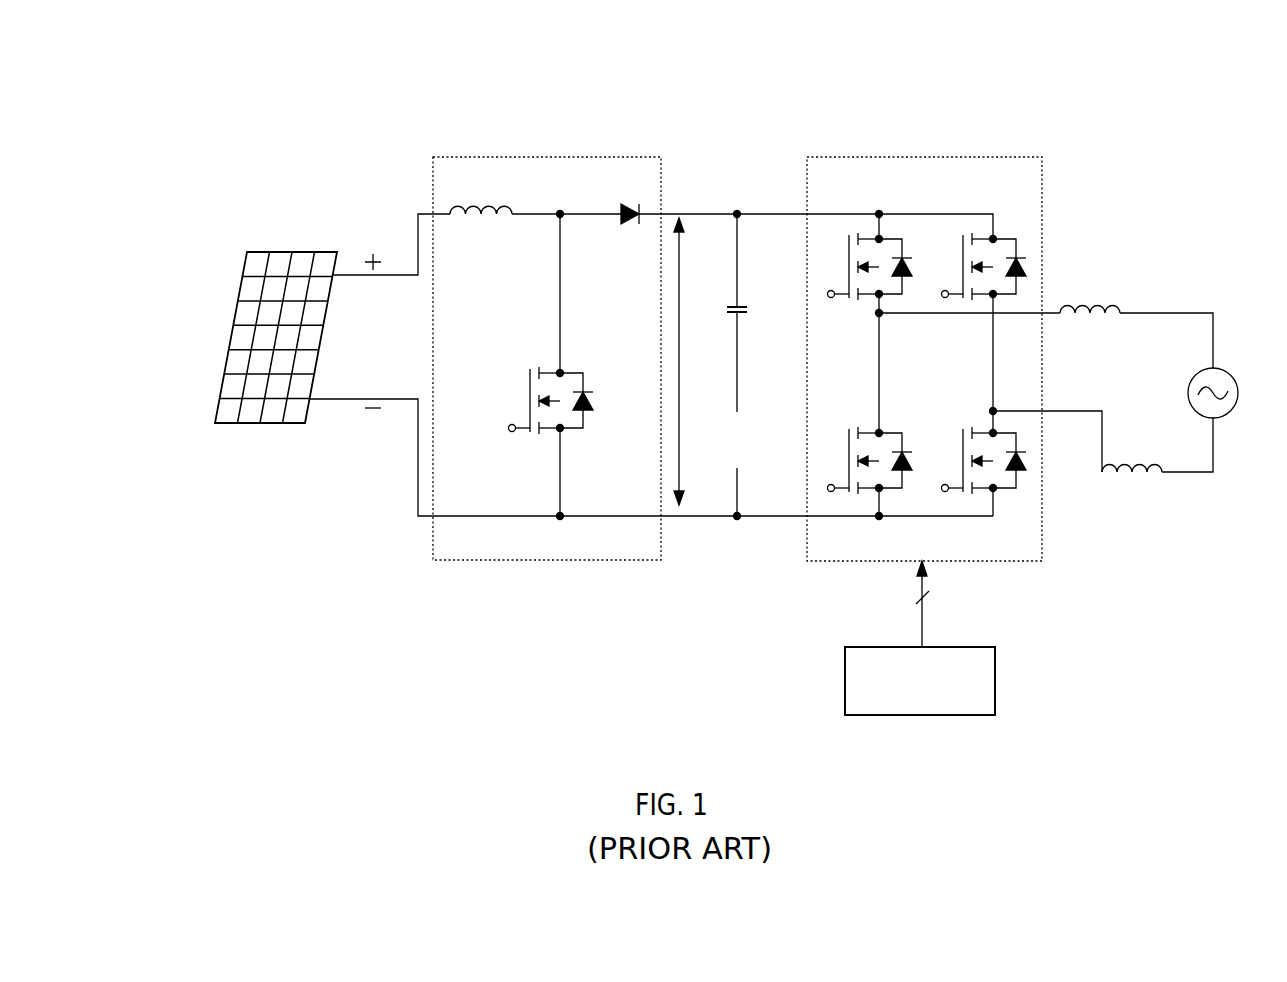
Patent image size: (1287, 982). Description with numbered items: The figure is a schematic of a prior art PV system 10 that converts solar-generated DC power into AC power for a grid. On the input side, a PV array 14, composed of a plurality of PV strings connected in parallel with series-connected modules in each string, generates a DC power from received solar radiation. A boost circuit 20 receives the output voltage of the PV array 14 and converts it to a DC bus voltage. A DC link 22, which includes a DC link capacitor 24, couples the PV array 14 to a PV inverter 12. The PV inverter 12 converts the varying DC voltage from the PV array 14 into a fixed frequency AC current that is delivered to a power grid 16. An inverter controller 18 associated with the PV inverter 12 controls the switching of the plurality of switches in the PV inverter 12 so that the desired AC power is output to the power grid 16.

The PV system 10 is at (199, 134).
The PV inverter 12 is at (920, 158).
The PV array 14 is at (285, 252).
The power grid 16 is at (1229, 371).
The inverter controller 18 is at (863, 647).
The boost circuit 20 is at (602, 158).
The DC link 22 is at (753, 213).
The DC link capacitor 24 is at (746, 306).